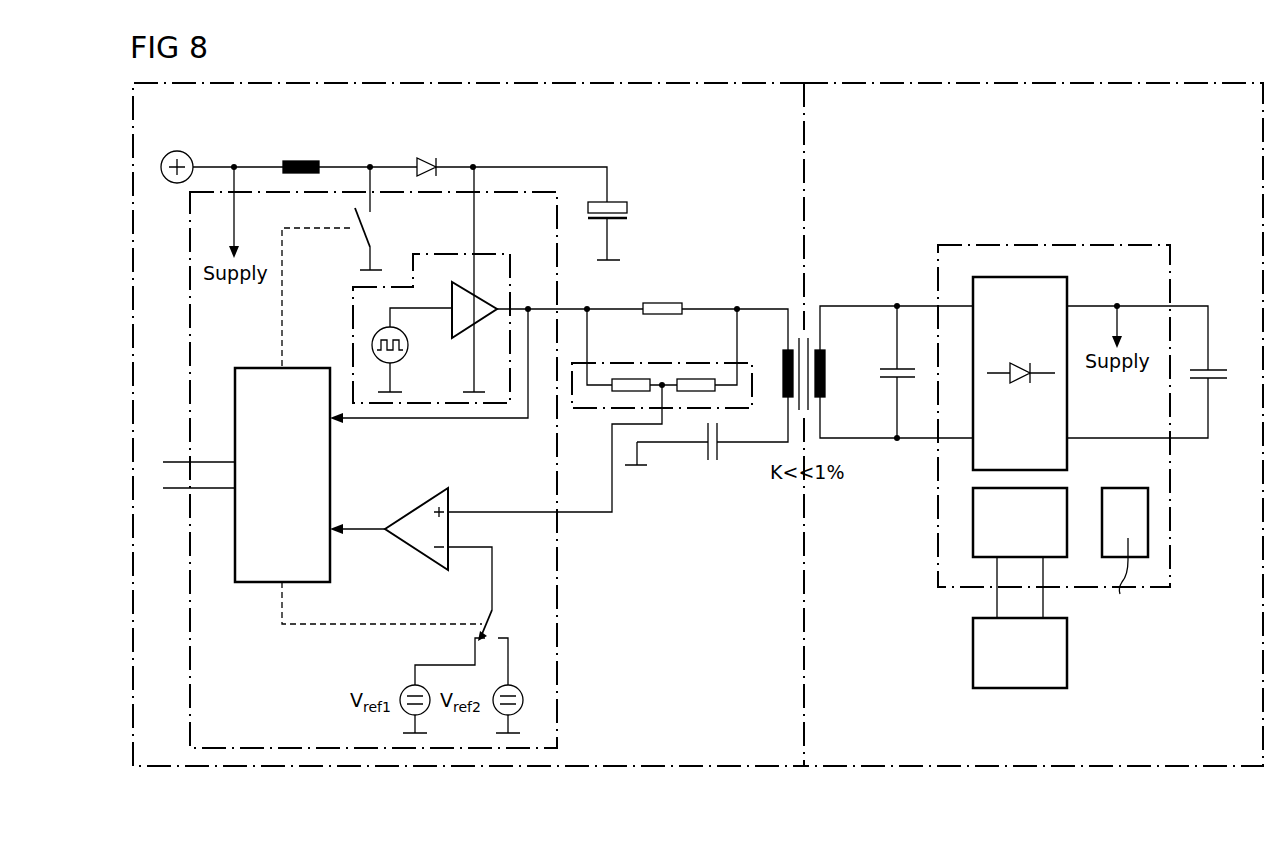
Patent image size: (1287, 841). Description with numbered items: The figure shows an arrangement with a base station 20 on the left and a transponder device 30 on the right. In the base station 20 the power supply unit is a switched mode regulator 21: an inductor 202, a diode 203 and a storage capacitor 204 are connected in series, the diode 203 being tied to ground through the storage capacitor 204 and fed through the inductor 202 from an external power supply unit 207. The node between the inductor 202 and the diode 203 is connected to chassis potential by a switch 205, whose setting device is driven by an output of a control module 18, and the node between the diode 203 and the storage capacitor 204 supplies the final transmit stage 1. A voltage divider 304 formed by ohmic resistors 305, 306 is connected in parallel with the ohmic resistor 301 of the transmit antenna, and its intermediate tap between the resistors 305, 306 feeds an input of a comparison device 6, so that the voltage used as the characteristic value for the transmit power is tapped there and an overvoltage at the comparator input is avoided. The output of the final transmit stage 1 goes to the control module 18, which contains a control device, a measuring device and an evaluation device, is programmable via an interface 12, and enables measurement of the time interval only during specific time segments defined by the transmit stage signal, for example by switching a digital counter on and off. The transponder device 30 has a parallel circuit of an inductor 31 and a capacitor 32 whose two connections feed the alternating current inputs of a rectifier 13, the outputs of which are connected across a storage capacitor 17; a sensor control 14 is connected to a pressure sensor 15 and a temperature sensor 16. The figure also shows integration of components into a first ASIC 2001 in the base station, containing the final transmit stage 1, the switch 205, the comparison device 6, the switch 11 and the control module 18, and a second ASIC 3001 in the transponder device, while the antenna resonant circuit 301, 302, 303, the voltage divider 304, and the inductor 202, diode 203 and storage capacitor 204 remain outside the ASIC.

The final transmit stage 1 is at (353, 318).
The comparison device 6 is at (416, 549).
The switch 11 is at (495, 626).
The interface 12 is at (217, 477).
The rectifier 13 is at (1020, 277).
The sensor control 14 is at (973, 520).
The pressure sensor 15 is at (973, 652).
The temperature sensor 16 is at (1148, 522).
The storage capacitor 17 is at (1215, 370).
The control module 18 is at (330, 474).
The base station 20 is at (654, 760).
The switched mode regulator 21 is at (372, 152).
The transponder device 30 is at (1047, 760).
The inductor 31 is at (827, 372).
The capacitor 32 is at (878, 375).
The inductor 202 is at (301, 161).
The diode 203 is at (426, 160).
The storage capacitor 204 is at (627, 207).
The switch 205 is at (372, 222).
The external power supply unit 207 is at (177, 184).
The ohmic resistor 301 is at (660, 302).
The antenna resonant circuit element 302 is at (781, 375).
The antenna resonant circuit element 303 is at (712, 461).
The voltage divider 304 is at (590, 408).
The ohmic resistor 305 is at (630, 379).
The ohmic resistor 306 is at (696, 379).
The first ASIC 2001 is at (560, 641).
The second ASIC 3001 is at (1090, 245).